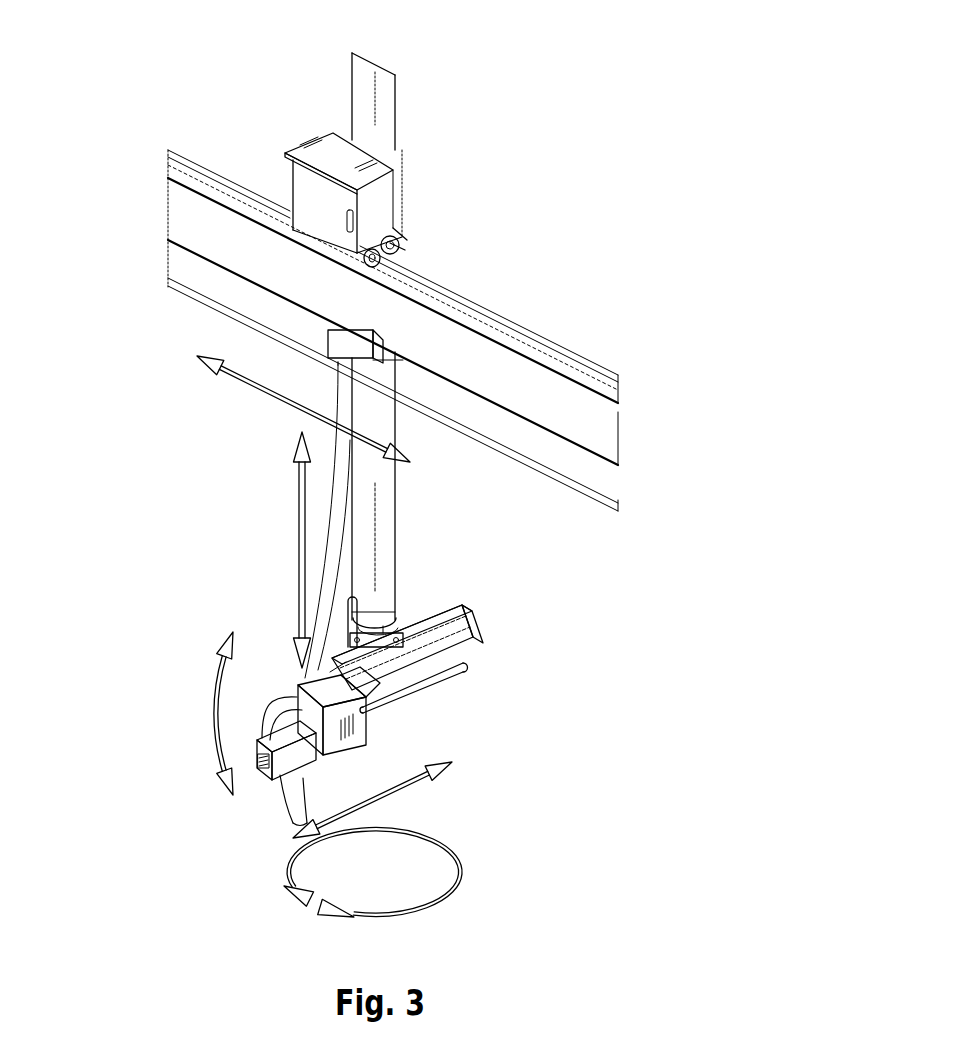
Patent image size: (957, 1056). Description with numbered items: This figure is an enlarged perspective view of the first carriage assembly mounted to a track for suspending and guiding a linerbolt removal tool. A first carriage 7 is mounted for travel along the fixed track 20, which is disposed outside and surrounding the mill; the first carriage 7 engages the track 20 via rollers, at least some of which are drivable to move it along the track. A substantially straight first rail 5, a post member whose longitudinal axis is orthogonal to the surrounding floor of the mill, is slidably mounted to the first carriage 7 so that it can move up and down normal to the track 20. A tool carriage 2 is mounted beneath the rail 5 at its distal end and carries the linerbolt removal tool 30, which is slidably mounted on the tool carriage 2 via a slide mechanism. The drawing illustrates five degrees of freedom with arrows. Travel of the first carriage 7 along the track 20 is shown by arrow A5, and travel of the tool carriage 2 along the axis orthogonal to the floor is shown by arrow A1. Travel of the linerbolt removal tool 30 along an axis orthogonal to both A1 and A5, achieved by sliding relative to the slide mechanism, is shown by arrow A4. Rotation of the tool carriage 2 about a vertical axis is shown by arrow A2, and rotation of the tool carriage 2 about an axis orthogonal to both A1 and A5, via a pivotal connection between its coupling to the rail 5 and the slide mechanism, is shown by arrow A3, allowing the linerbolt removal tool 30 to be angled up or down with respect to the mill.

The tool carriage 2 is at (308, 683).
The first rail 5 is at (398, 108).
The first carriage 7 is at (289, 176).
The track 20 is at (608, 424).
The linerbolt removal tool 30 is at (478, 642).
The arrow A1 is at (298, 535).
The arrow A2 is at (463, 870).
The arrow A3 is at (217, 718).
The arrow A4 is at (393, 795).
The arrow A5 is at (262, 390).